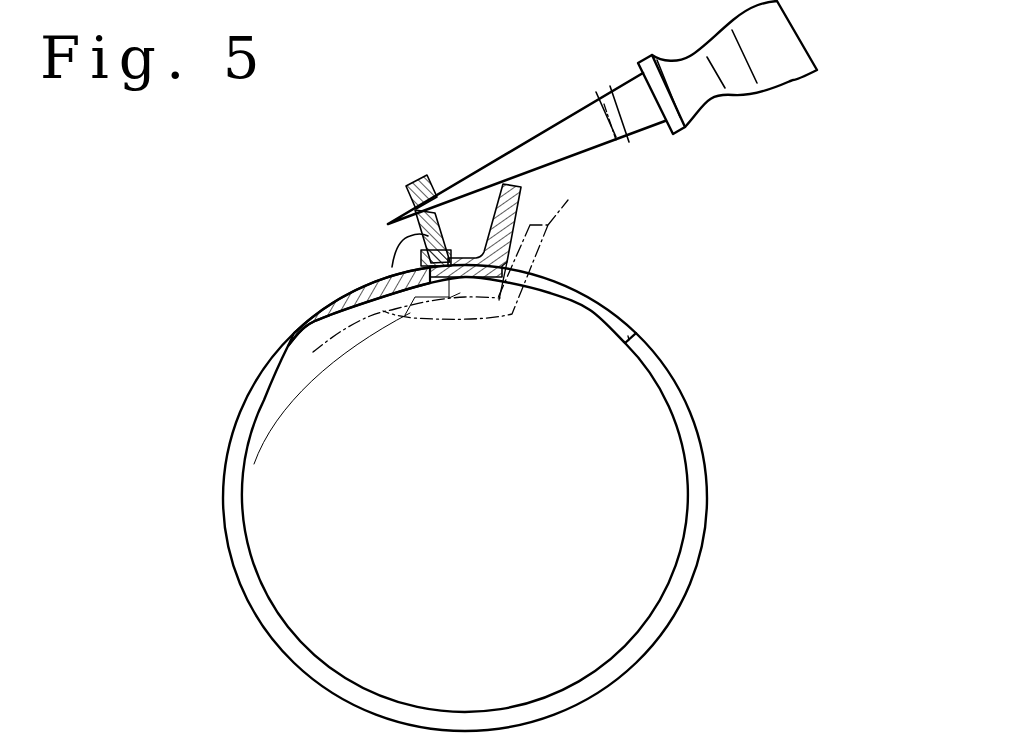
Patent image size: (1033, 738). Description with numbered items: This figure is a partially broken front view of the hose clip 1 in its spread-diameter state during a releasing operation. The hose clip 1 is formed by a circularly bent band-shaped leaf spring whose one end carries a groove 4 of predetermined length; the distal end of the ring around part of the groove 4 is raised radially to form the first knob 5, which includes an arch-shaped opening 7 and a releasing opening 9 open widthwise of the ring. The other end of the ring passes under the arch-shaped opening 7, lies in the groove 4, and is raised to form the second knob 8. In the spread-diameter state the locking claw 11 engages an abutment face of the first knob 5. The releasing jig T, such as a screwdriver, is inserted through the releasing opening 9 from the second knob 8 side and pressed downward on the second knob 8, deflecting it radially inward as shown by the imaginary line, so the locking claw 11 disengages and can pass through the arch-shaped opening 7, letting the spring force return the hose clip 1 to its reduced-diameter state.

The hose clip 1 is at (696, 428).
The groove 4 is at (604, 303).
The first knob 5 is at (415, 176).
The arch-shaped opening 7 is at (433, 266).
The second knob 8 is at (523, 191).
The releasing opening 9 is at (403, 198).
The locking claw 11 is at (412, 242).
The releasing jig T is at (772, 72).